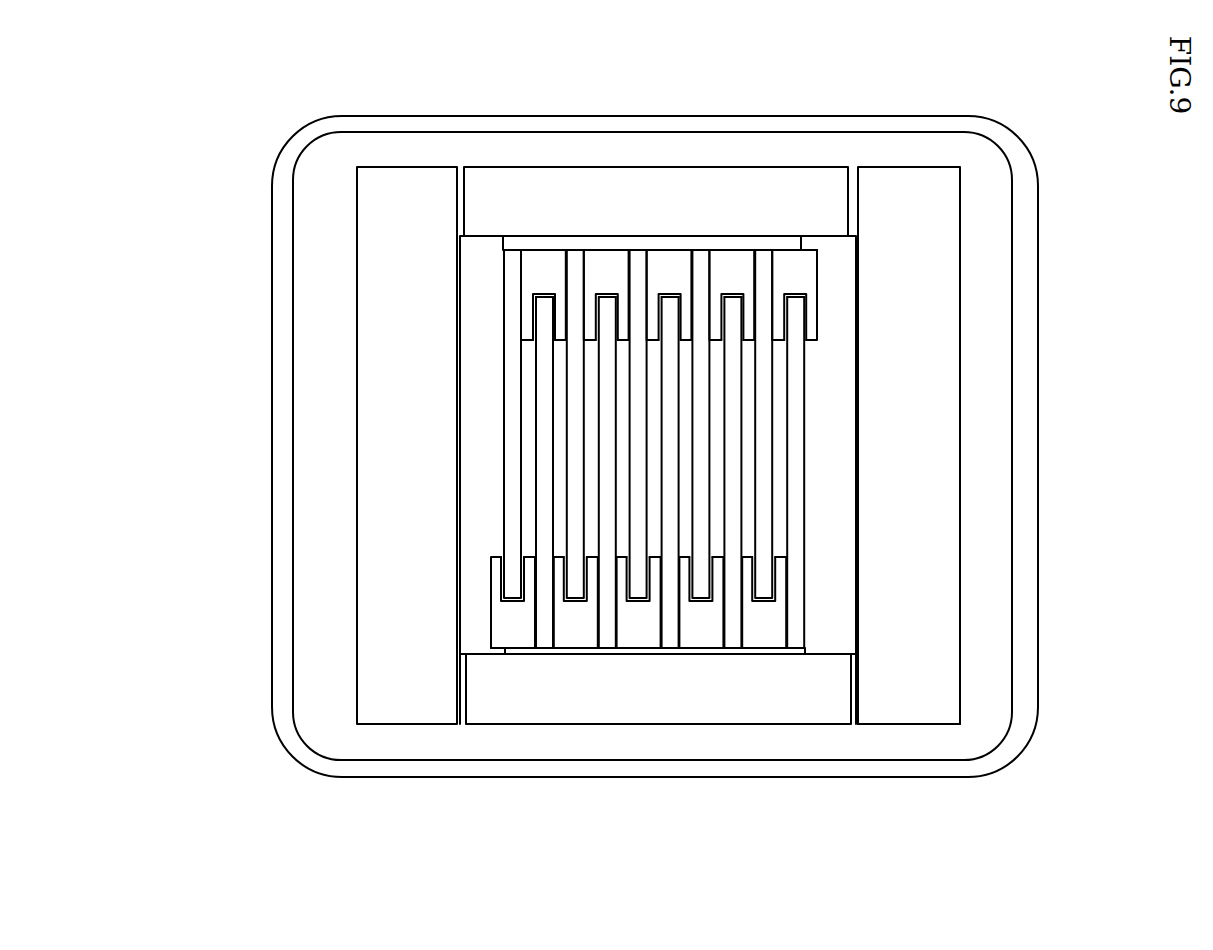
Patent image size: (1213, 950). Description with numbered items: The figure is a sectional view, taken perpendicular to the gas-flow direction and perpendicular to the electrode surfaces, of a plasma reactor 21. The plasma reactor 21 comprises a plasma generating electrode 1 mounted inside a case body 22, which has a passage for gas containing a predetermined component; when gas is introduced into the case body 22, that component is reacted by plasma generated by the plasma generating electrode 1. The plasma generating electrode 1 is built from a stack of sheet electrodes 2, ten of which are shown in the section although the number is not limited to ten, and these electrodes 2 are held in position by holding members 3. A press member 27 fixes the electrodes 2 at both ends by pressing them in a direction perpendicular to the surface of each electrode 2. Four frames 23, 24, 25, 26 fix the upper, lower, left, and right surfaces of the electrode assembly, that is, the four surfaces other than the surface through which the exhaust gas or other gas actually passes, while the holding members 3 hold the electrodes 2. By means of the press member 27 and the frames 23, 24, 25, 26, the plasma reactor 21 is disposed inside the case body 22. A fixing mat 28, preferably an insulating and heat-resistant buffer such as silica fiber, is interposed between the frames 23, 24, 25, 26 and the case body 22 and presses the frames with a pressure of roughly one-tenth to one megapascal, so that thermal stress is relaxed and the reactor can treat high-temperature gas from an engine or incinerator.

The plasma generating electrode 1 is at (787, 545).
The electrodes 2 is at (800, 528).
The holding members 3 is at (767, 630).
The plasma reactor 21 is at (640, 67).
The case body 22 is at (1020, 170).
The frame 23 is at (753, 208).
The frame 24 is at (555, 688).
The frame 25 is at (410, 560).
The frame 26 is at (937, 378).
The press member 27 is at (480, 568).
The fixing mat 28 is at (943, 631).